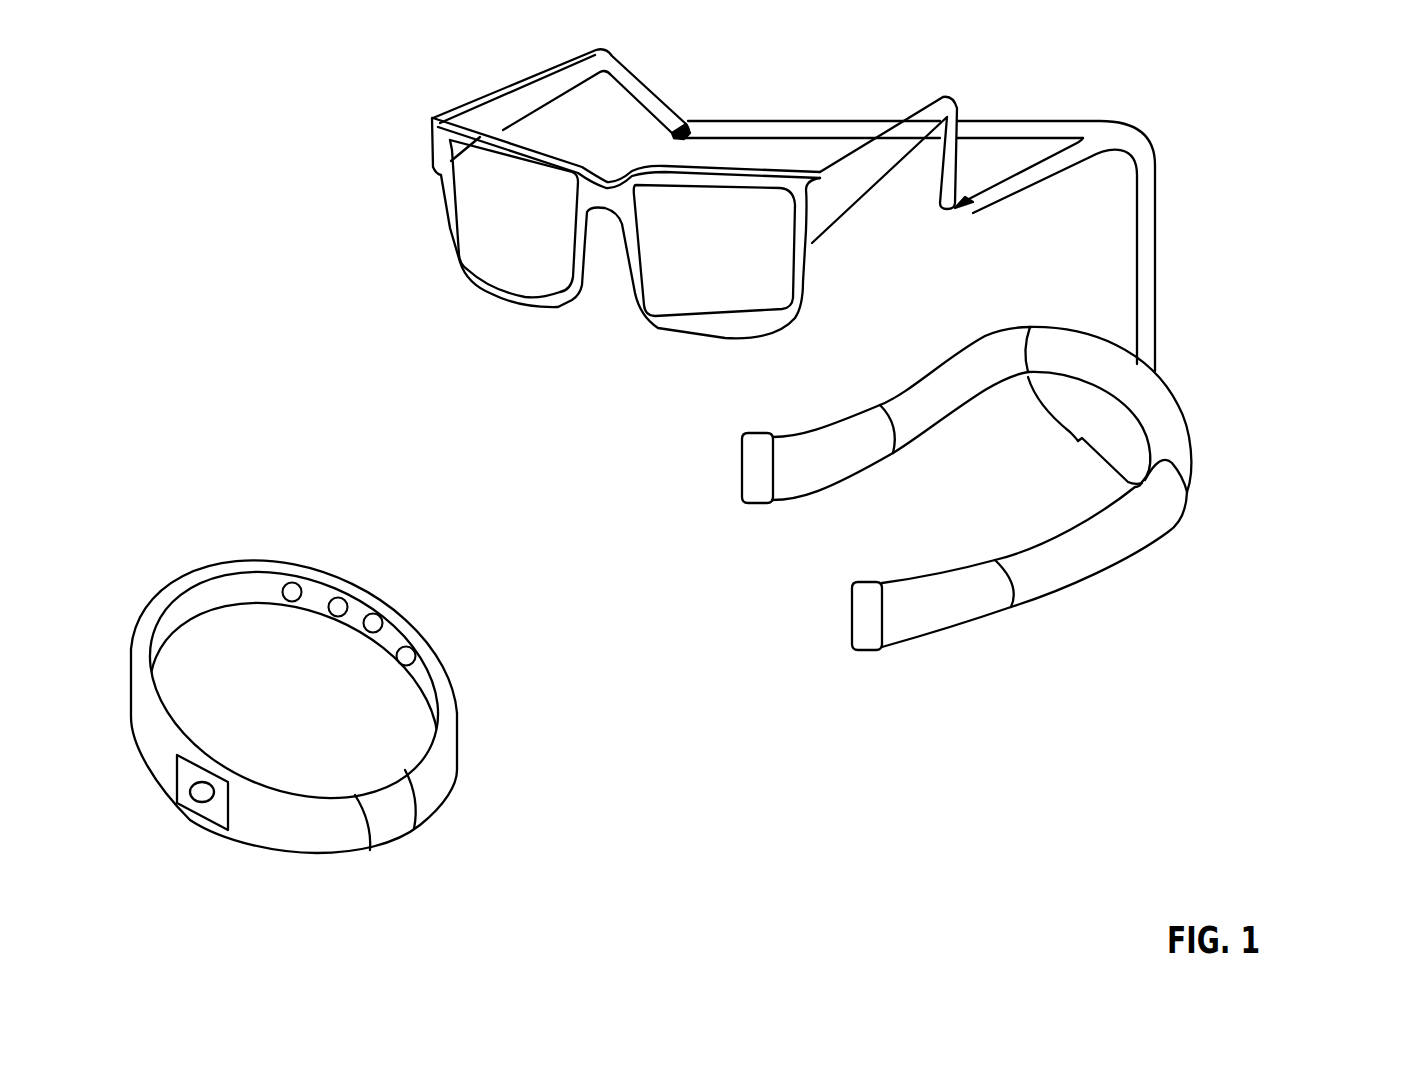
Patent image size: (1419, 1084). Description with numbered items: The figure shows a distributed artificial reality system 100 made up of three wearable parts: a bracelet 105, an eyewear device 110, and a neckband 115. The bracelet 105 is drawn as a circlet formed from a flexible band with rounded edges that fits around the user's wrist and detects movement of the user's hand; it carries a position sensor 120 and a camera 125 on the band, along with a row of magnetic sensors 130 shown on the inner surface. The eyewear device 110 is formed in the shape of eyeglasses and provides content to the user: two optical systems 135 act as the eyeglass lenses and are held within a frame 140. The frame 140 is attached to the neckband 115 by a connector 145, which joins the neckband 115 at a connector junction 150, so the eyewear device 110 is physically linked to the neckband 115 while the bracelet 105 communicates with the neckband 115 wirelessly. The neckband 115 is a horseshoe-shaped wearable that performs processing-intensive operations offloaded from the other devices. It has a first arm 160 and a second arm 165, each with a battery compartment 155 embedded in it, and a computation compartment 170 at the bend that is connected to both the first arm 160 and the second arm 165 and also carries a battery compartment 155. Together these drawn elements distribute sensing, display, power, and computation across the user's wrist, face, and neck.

The distributed artificial reality system 100 is at (200, 84).
The bracelet 105 is at (502, 647).
The eyewear device 110 is at (430, 317).
The neckband 115 is at (1008, 511).
The position sensor 120 is at (394, 828).
The camera 125 is at (210, 810).
The magnetic sensors 130 is at (396, 571).
The optical systems 135 is at (548, 260).
The frame 140 is at (857, 152).
The connector 145 is at (1150, 149).
The connector junction 150 is at (1156, 369).
The battery compartments 155 is at (922, 415).
The first arm 160 is at (884, 383).
The second arm 165 is at (1040, 659).
The computation compartment 170 is at (1067, 421).